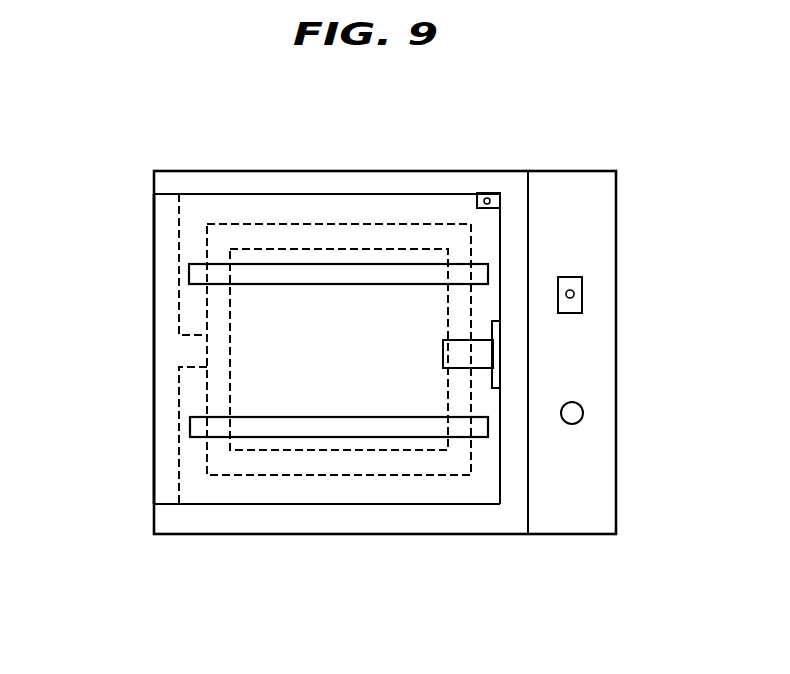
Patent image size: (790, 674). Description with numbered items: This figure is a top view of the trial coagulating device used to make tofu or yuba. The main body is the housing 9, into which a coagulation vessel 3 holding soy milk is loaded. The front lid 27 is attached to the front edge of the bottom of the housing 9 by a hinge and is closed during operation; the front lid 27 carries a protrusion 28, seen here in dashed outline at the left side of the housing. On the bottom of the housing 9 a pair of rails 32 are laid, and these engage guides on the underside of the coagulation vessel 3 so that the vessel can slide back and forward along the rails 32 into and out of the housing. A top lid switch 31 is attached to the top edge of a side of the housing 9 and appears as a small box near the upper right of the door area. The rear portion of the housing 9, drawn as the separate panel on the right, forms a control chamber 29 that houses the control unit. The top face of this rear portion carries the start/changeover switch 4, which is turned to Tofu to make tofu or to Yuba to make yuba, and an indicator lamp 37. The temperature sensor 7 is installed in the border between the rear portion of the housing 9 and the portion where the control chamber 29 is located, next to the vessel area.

The housing 9 is at (343, 170).
The coagulation vessel 3 is at (272, 238).
The top lid switch 31 is at (487, 192).
The front lid 27 is at (162, 272).
The protrusion 28 is at (193, 350).
The rails 32 is at (350, 285).
The start/changeover switch 4 is at (575, 294).
The temperature sensor 7 is at (488, 352).
The indicator lamp 37 is at (583, 413).
The control chamber 29 is at (600, 465).